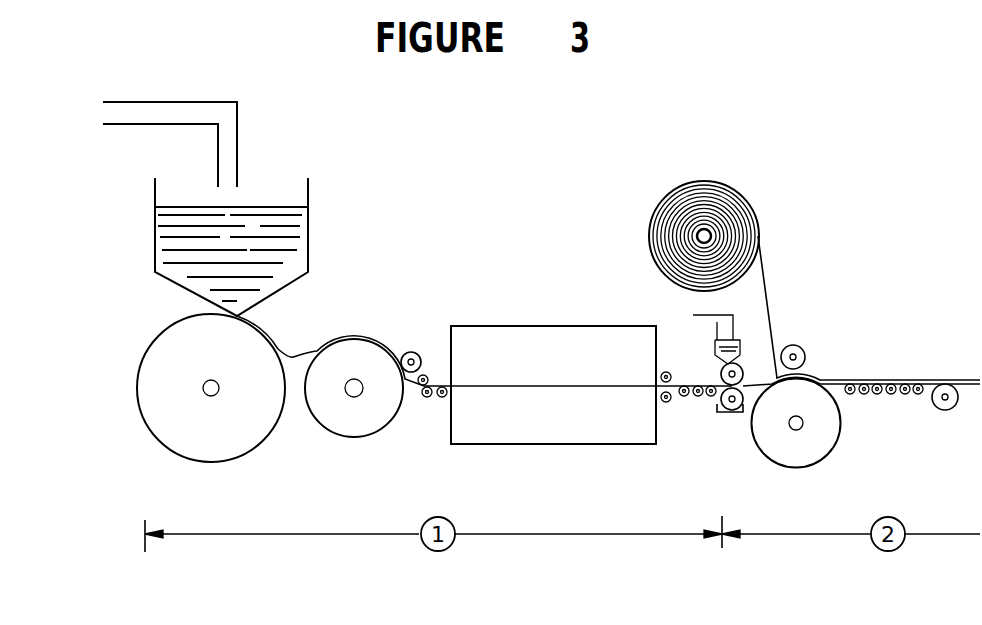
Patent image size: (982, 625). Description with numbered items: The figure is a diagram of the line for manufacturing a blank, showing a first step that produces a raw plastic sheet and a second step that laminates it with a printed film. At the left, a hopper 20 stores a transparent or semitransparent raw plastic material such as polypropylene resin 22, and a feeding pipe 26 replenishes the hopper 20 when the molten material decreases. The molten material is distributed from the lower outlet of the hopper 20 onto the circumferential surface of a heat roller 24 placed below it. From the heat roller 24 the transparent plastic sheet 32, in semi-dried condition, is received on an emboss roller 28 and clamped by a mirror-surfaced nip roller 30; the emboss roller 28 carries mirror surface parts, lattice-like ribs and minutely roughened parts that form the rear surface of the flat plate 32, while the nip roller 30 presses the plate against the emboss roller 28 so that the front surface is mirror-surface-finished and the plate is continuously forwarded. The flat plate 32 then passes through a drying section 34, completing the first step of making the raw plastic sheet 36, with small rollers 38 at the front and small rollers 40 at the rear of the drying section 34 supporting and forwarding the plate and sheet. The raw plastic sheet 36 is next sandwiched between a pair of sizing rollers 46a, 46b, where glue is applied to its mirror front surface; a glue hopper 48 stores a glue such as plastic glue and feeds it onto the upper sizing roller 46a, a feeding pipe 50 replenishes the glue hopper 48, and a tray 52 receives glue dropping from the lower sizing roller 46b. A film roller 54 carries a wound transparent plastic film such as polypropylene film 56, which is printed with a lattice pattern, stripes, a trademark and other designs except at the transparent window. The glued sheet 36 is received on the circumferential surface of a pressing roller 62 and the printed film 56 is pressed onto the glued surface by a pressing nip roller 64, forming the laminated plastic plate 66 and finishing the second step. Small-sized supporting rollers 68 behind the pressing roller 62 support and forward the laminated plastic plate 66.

The hopper 20 is at (309, 184).
The polypropylene resin 22 is at (296, 218).
The heat roller 24 is at (208, 436).
The feeding pipe 26 is at (231, 113).
The emboss roller 28 is at (345, 418).
The nip roller 30 is at (411, 351).
The transparent plastic sheet 32 is at (293, 356).
The drying section 34 is at (543, 427).
The raw plastic sheet 36 is at (674, 368).
The small rollers 38 is at (428, 400).
The small rollers 40 is at (683, 400).
The sizing roller 46a is at (741, 364).
The sizing roller 46b is at (727, 413).
The glue hopper 48 is at (713, 343).
The feeding pipe 50 is at (722, 313).
The tray 52 is at (735, 415).
The film roller 54 is at (678, 214).
The polypropylene film 56 is at (763, 266).
The pressing roller 62 is at (812, 447).
The pressing nip roller 64 is at (795, 356).
The laminated plastic plate 66 is at (891, 380).
The supporting rollers 68 is at (891, 396).